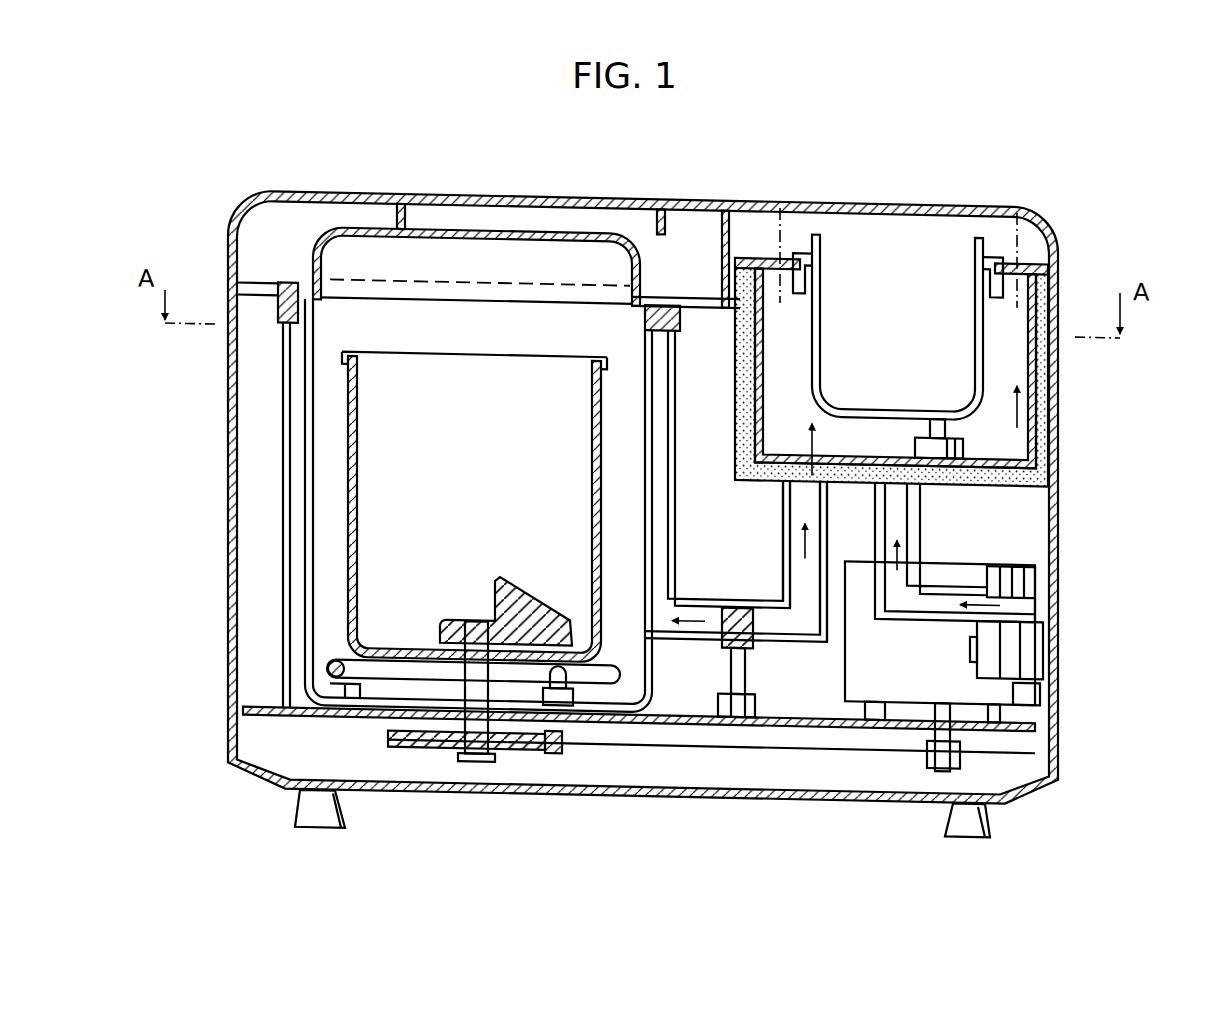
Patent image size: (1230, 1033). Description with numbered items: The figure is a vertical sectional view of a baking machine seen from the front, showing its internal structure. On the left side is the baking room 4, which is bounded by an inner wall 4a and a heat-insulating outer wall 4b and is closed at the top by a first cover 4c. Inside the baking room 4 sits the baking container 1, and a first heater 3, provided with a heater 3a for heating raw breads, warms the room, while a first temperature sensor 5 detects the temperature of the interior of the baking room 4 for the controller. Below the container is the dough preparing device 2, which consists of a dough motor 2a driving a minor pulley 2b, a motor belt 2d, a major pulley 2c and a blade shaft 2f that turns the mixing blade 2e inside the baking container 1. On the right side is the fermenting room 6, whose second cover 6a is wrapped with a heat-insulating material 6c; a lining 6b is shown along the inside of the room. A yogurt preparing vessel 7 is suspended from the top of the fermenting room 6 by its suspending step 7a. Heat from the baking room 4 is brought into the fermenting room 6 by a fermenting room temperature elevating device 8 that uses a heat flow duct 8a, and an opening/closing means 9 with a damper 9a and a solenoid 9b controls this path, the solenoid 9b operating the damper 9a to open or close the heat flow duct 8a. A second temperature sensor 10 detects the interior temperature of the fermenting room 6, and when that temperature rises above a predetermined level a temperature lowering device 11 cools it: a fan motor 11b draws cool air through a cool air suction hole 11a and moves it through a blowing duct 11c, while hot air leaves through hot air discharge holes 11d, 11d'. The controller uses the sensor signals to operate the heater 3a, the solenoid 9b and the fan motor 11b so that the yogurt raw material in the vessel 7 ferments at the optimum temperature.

The baking container 1 is at (348, 443).
The dough preparing device 2 is at (445, 765).
The dough motor 2a is at (1058, 577).
The minor pulley 2b is at (935, 767).
The major pulley 2c is at (553, 757).
The motor belt 2d is at (850, 748).
The mixing blade 2e is at (440, 621).
The blade shaft 2f is at (478, 775).
The first heater 3 is at (345, 696).
The heater 3a is at (327, 671).
The baking room 4 is at (305, 587).
The inner wall 4a is at (290, 505).
The heat-insulating outer wall 4b is at (312, 555).
The first cover 4c is at (468, 236).
The first temperature sensor 5 is at (575, 708).
The fermenting room 6 is at (1058, 354).
The second cover 6a is at (890, 203).
The box inner wall 6b is at (1058, 394).
The heat-insulating material 6c is at (1058, 428).
The yogurt preparing vessel 7 is at (948, 250).
The suspending step 7a is at (1000, 256).
The fermenting room temperature elevating device 8 is at (1058, 493).
The heat flow duct 8a is at (1058, 523).
The opening/closing means 9 is at (718, 690).
The damper 9a is at (755, 650).
The solenoid 9b is at (742, 716).
The second temperature sensor 10 is at (1058, 446).
The temperature lowering device 11 is at (1062, 650).
The cool air suction hole 11a is at (1058, 661).
The fan motor 11b is at (1058, 621).
The blowing duct 11c is at (1058, 551).
The hot air discharge hole 11d is at (1093, 401).
The hot air discharge hole 11d' is at (1021, 199).